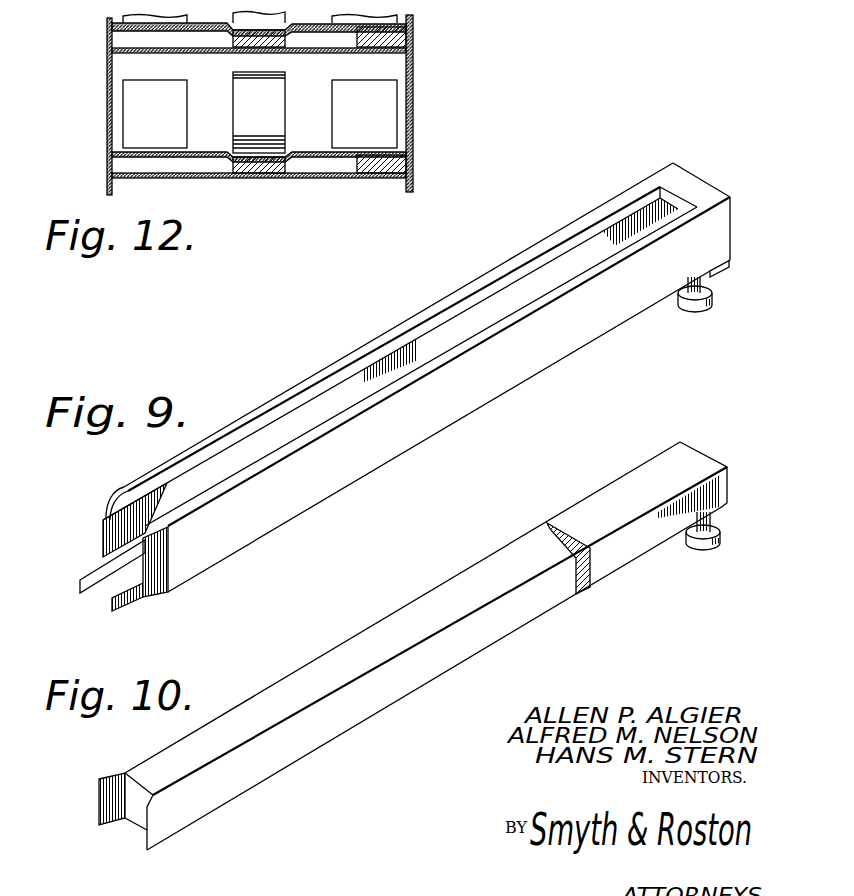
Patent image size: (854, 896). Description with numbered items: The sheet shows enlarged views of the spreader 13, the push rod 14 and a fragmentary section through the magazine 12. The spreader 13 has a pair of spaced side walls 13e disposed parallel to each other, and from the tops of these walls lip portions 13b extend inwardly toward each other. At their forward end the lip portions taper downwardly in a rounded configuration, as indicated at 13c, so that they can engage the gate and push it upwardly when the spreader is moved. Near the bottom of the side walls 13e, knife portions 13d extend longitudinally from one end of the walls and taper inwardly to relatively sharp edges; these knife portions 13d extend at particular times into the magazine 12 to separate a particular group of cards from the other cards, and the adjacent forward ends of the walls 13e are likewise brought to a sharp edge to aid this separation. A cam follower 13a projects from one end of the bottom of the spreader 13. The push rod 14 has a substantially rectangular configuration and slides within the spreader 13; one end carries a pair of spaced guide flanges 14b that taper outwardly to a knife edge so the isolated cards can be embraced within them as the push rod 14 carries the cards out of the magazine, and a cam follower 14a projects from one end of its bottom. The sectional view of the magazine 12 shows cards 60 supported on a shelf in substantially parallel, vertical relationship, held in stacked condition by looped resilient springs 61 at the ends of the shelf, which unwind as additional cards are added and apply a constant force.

In FIG. 12, the magazine 12 is at (292, 112).
In FIG. 12, the cards 60 is at (312, 140).
In FIG. 12, the looped resilient springs 61 is at (253, 145).
In FIG. 9, the spreader 13 is at (376, 399).
In FIG. 9, the cam follower 13a is at (697, 312).
In FIG. 9, the lip portions 13b is at (312, 394).
In FIG. 9, the rounded tapered forward end of lip portions 13c is at (106, 514).
In FIG. 9, the knife portions 13d is at (80, 585).
In FIG. 9, the side walls 13e is at (421, 351).
In FIG. 10, the push rod 14 is at (387, 659).
In FIG. 10, the cam follower 14a is at (705, 550).
In FIG. 10, the guide flanges 14b is at (99, 807).